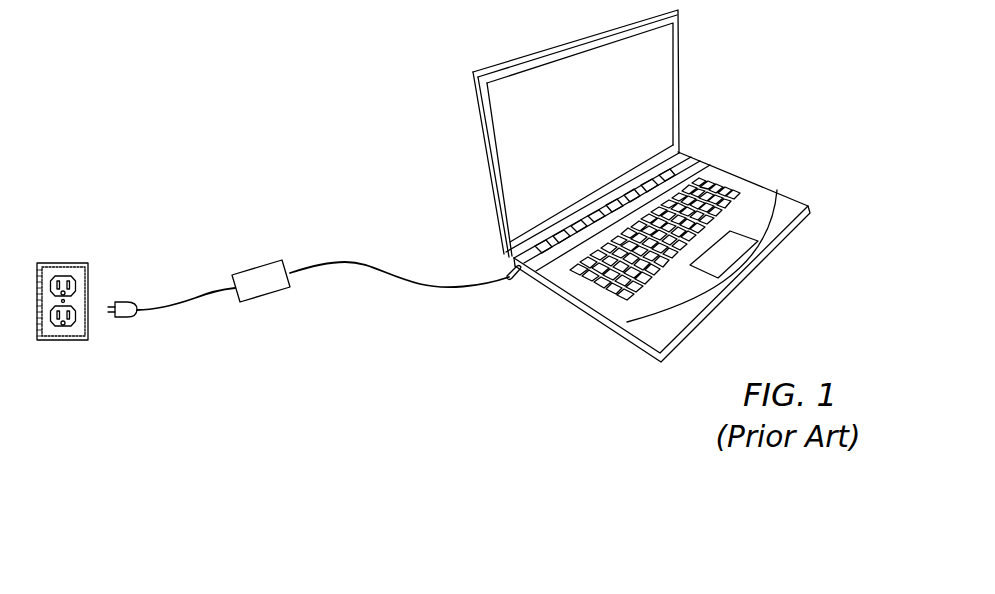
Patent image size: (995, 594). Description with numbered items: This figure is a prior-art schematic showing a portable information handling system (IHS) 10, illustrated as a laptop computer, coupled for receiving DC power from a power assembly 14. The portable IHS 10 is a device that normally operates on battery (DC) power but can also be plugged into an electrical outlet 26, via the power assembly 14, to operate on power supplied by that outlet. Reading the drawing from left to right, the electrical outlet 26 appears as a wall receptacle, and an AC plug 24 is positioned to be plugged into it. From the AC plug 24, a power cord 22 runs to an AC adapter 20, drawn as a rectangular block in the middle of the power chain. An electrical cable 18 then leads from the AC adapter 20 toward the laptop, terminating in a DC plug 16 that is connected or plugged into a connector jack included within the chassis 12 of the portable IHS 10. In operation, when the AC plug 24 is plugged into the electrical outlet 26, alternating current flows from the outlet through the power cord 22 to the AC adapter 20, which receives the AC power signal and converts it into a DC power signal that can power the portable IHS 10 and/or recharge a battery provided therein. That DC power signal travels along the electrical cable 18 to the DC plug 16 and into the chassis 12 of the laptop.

The portable information handling system 10 is at (641, 186).
The chassis 12 is at (574, 306).
The power assembly 14 is at (314, 240).
The DC plug 16 is at (507, 273).
The electrical cable 18 is at (343, 262).
The AC adapter 20 is at (252, 275).
The power cord 22 is at (193, 300).
The AC plug 24 is at (125, 300).
The electrical outlet 26 is at (64, 262).